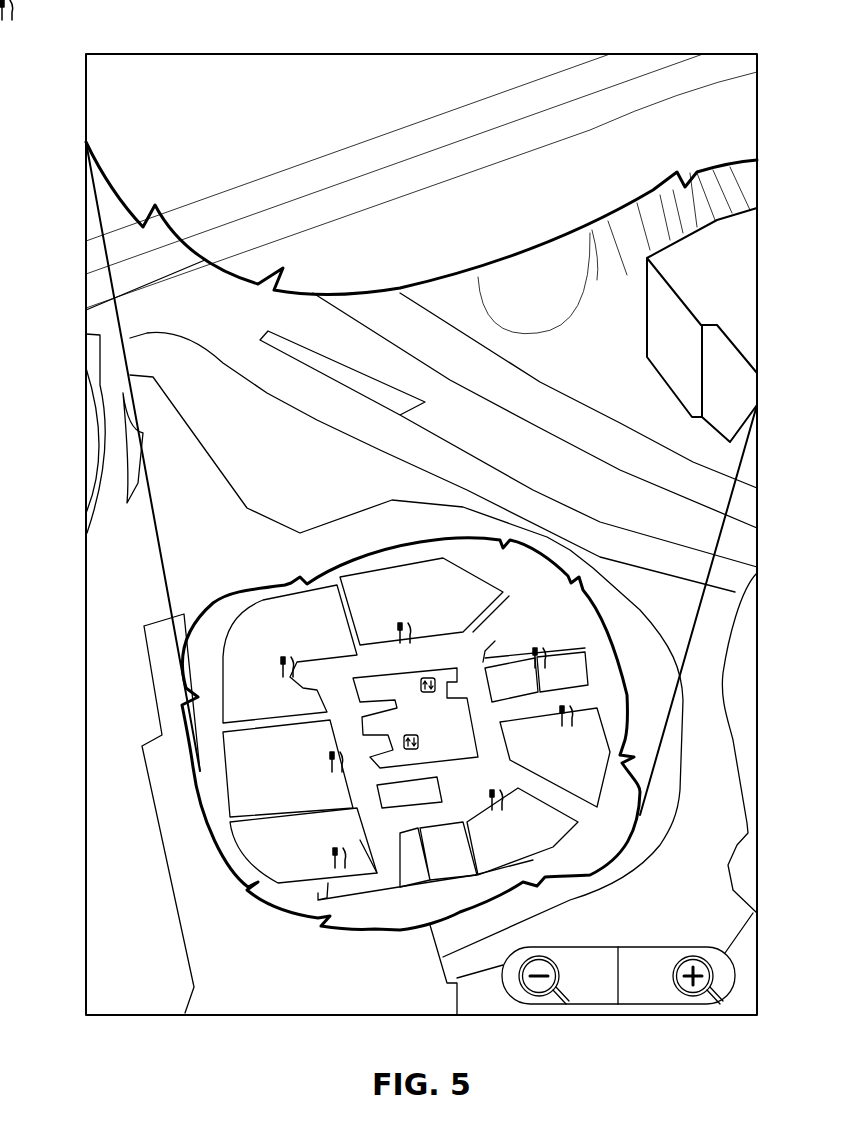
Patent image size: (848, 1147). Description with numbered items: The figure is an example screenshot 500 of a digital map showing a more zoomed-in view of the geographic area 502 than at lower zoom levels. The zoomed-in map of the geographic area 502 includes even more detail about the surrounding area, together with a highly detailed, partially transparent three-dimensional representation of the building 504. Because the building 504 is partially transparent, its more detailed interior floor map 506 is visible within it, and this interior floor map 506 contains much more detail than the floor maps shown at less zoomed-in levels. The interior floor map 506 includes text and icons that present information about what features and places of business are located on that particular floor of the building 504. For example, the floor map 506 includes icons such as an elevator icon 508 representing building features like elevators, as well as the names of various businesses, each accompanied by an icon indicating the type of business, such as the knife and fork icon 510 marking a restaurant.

The screenshot 500 is at (578, 31).
The geographic area 502 is at (106, 79).
The building 504 is at (108, 212).
The interior floor map 506 is at (205, 597).
The elevator icon 508 is at (432, 678).
The knife and fork icon 510 is at (289, 684).